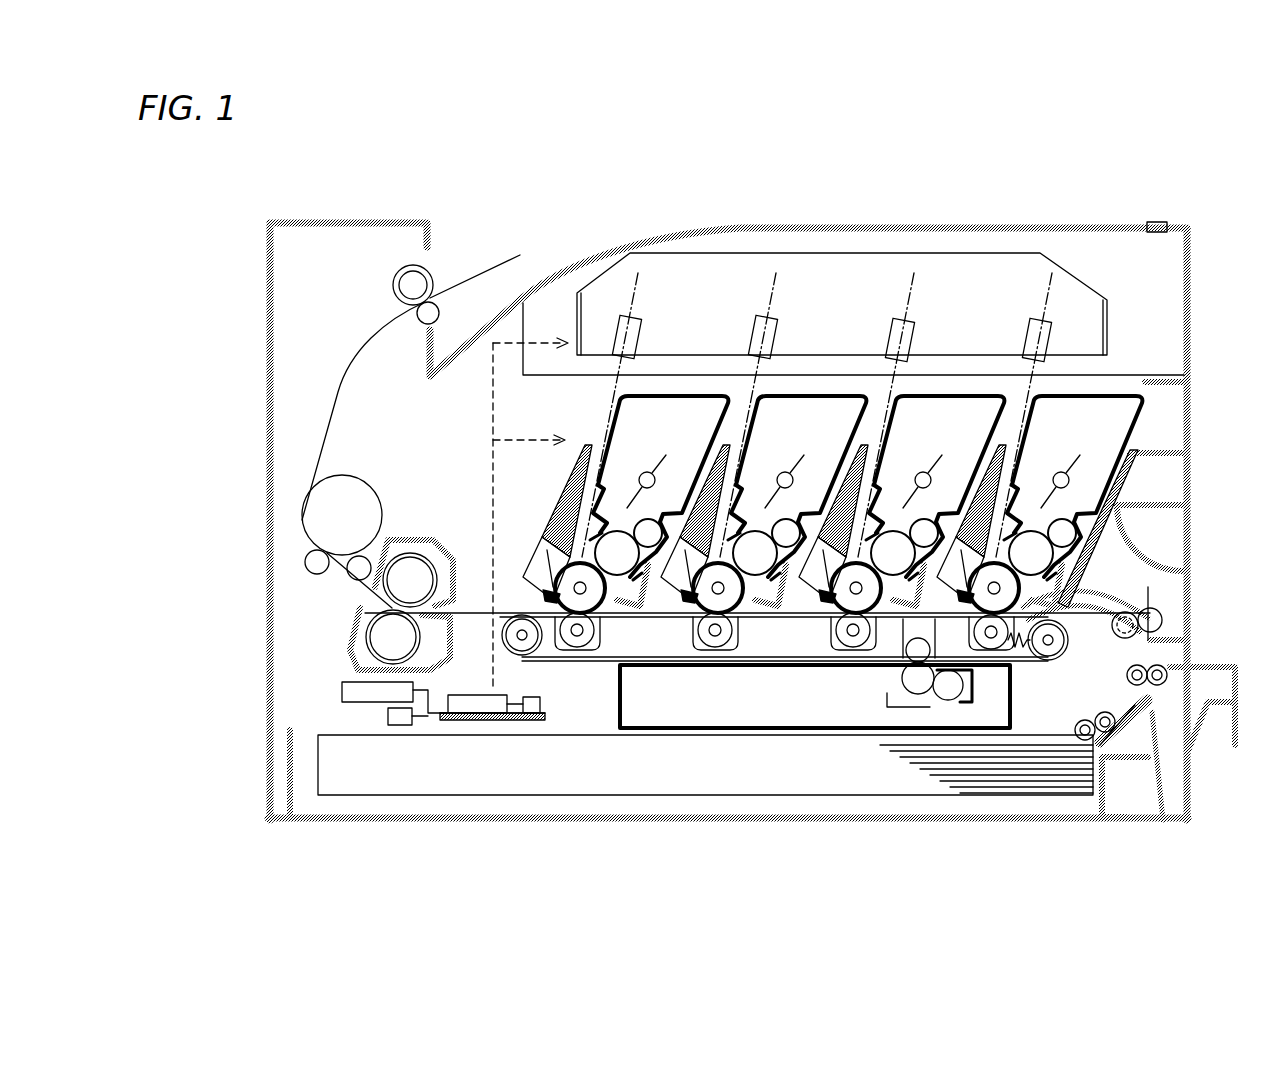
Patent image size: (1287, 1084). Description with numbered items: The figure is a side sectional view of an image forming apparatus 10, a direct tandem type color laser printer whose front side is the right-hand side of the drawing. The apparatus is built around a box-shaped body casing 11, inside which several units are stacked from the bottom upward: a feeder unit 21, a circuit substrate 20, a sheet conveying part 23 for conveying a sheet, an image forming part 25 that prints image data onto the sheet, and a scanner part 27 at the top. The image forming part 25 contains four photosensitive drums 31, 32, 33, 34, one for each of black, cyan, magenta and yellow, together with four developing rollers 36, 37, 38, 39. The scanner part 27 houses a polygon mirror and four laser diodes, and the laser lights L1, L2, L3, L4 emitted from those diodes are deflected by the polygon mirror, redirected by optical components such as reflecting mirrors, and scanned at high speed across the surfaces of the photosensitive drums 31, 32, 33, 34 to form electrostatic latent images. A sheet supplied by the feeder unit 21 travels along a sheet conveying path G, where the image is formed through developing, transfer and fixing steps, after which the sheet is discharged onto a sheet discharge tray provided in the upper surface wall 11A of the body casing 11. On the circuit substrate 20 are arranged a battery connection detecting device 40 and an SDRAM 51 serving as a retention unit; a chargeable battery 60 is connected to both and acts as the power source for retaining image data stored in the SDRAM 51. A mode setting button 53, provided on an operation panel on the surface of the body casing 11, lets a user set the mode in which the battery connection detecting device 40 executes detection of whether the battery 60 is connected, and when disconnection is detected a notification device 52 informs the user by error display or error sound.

The image forming apparatus 10 is at (350, 202).
The body casing 11 is at (268, 545).
The upper surface wall 11A is at (738, 227).
The circuit substrate 20 is at (482, 720).
The feeder unit 21 is at (872, 813).
The sheet conveying part 23 is at (1088, 662).
The image forming part 25 is at (522, 486).
The scanner part 27 is at (863, 267).
The photosensitive drum 31 is at (990, 607).
The photosensitive drum 32 is at (843, 603).
The photosensitive drum 33 is at (712, 603).
The photosensitive drum 34 is at (588, 603).
The developing roller 36 is at (1026, 553).
The developing roller 37 is at (888, 553).
The developing roller 38 is at (750, 553).
The developing roller 39 is at (612, 553).
The battery connection detecting device 40 is at (1147, 226).
The SDRAM 51 is at (542, 705).
The notification device 52 is at (388, 716).
The mode setting button 53 is at (1160, 222).
The chargeable battery 60 is at (342, 690).
The sheet conveying path G is at (316, 452).
The laser light L1 is at (1046, 300).
The laser light L2 is at (916, 295).
The laser light L3 is at (780, 292).
The laser light L4 is at (642, 292).